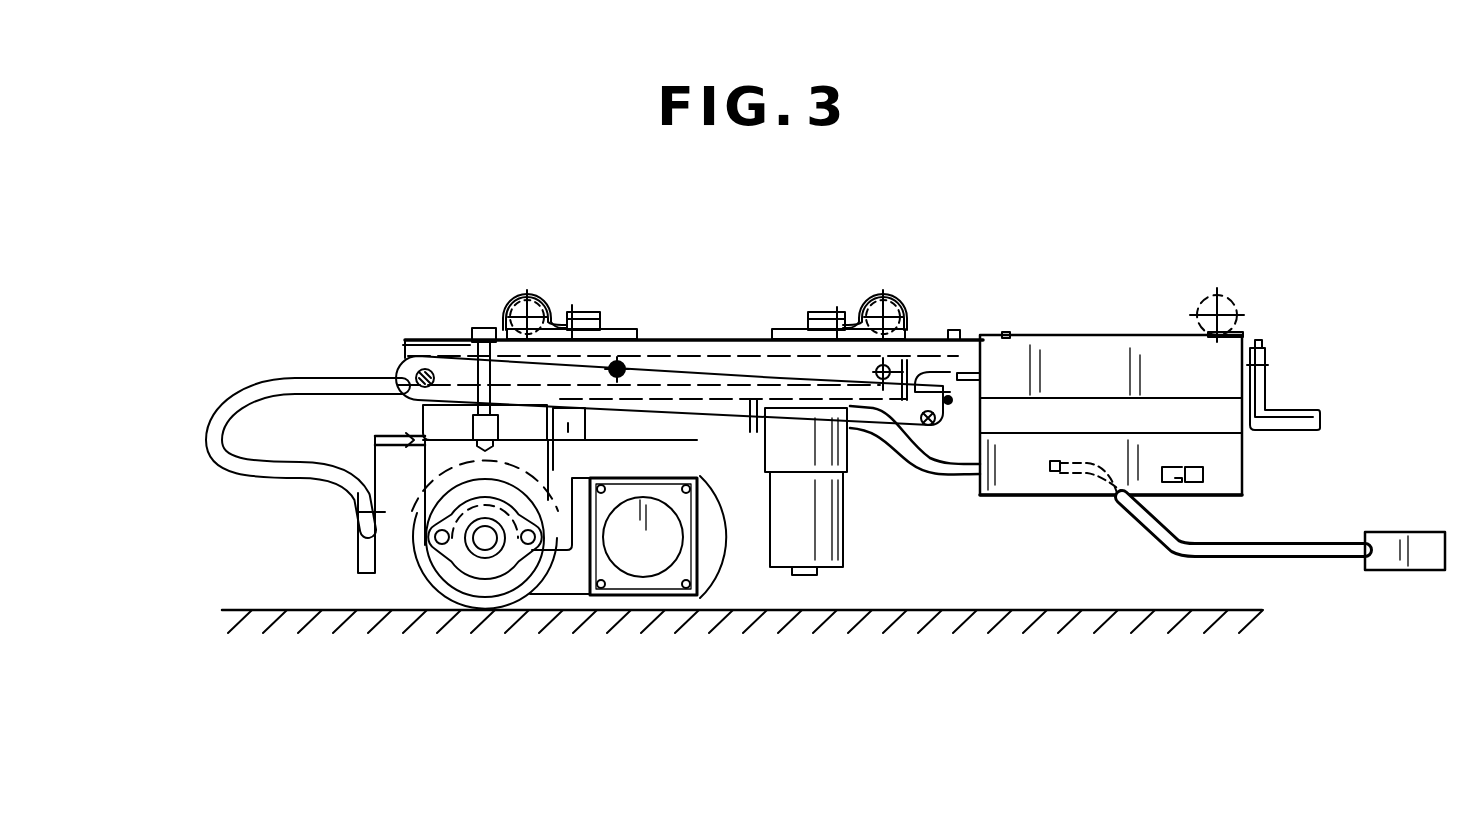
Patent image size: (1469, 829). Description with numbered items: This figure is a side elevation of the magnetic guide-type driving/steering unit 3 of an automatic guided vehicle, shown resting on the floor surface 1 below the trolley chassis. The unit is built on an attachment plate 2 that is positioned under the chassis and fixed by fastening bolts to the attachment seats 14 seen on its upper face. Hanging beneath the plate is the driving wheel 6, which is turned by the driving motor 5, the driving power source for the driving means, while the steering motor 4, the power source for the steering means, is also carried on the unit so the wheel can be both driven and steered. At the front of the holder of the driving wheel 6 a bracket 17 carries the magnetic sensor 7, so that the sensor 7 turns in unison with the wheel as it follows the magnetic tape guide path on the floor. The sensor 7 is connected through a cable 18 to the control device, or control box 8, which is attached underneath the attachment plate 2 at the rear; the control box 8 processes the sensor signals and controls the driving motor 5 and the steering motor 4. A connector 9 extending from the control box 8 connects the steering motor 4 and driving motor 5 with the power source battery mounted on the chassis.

The floor 1 is at (263, 608).
The attachment plate 2 is at (707, 345).
The driving/steering unit 3 is at (362, 327).
The steering motor 4 is at (845, 543).
The motor 5 is at (640, 573).
The driving wheel 6 is at (505, 600).
The magnetic sensor 7 is at (358, 532).
The control device (control box) 8 is at (1063, 488).
The connector 9 is at (1407, 567).
The attachment seats 14 is at (518, 295).
The bracket 17 is at (367, 453).
The cable 18 is at (267, 390).